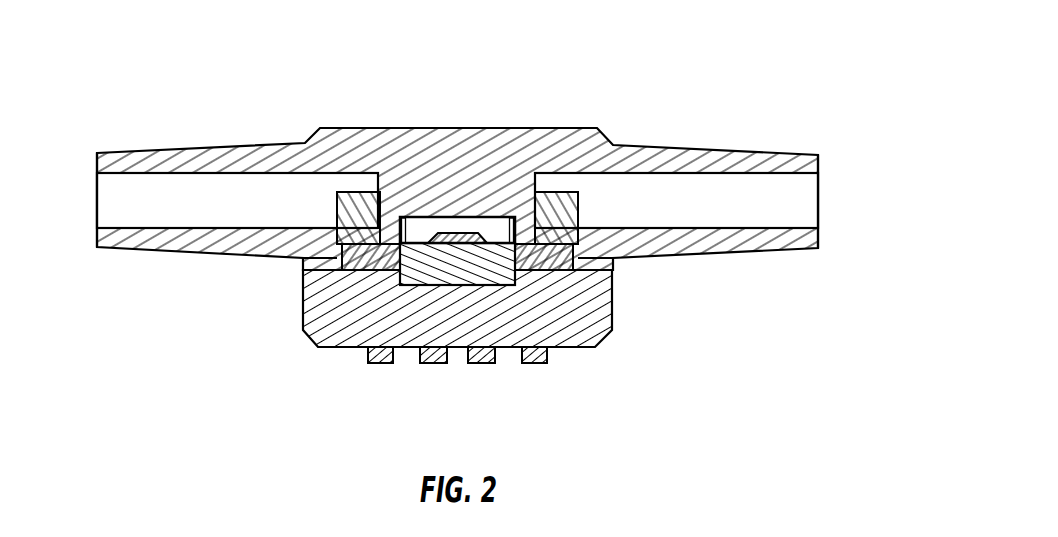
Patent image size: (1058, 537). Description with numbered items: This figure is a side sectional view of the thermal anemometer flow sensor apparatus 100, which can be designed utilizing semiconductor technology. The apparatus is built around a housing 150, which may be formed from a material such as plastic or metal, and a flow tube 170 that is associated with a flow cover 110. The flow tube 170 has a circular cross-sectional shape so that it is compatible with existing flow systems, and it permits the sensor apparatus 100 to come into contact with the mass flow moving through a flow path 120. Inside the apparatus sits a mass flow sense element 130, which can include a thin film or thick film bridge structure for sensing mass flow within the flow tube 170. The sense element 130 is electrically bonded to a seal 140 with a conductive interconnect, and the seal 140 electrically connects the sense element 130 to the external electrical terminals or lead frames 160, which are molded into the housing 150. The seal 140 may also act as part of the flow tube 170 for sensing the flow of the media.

The thermal anemometer flow sensor apparatus 100 is at (153, 72).
The flow cover 110 is at (702, 153).
The flow path 120 is at (838, 195).
The mass flow sense element 130 is at (460, 235).
The seal 140 is at (412, 278).
The housing 150 is at (315, 310).
The lead frames 160 is at (535, 363).
The flow tube 170 is at (105, 202).